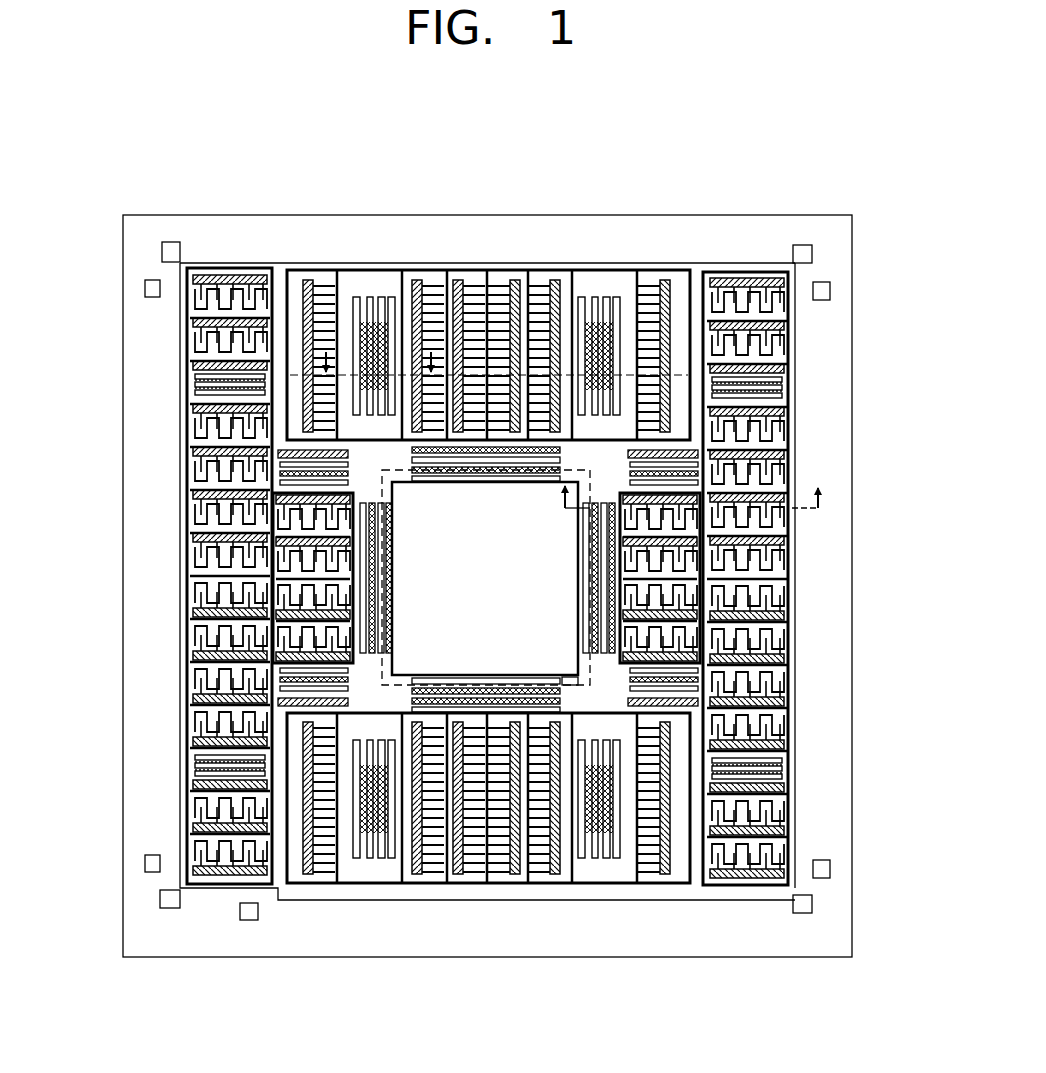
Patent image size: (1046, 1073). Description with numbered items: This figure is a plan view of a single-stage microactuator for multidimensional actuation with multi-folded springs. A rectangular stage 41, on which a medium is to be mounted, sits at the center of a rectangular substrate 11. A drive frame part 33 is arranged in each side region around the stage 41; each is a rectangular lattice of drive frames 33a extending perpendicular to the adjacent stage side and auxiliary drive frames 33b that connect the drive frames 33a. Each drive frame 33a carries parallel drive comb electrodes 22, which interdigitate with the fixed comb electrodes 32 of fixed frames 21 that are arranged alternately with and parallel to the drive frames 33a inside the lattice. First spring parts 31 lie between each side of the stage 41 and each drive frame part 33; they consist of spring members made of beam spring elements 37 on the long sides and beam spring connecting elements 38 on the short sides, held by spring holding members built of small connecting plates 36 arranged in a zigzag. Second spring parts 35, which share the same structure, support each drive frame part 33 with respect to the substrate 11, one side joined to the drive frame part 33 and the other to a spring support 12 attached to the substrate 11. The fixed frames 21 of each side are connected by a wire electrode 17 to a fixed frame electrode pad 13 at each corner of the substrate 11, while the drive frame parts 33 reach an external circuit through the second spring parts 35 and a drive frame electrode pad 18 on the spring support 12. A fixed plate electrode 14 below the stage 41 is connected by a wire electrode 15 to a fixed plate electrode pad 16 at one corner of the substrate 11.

The substrate 11 is at (852, 470).
The spring support 12 is at (355, 268).
The fixed frame electrode pad 13 is at (172, 245).
The fixed plate electrode 14 is at (398, 672).
The wire electrode 15 is at (215, 890).
The fixed plate electrode pad 16 is at (167, 903).
The wire electrode 17 is at (796, 538).
The drive frame electrode pad 18 is at (780, 790).
The fixed frame 21 is at (428, 270).
The drive comb electrode 22 is at (772, 578).
The first spring part 31 is at (390, 464).
The fixed comb electrode 32 is at (782, 690).
The drive frame part 33 is at (183, 501).
The drive frame 33a is at (340, 268).
The auxiliary drive frame 33b is at (287, 268).
The second spring part 35 is at (385, 272).
The connecting plate 36 is at (458, 702).
The beam spring element 37 is at (548, 692).
The beam spring connecting element 38 is at (574, 690).
The stage 41 is at (502, 582).